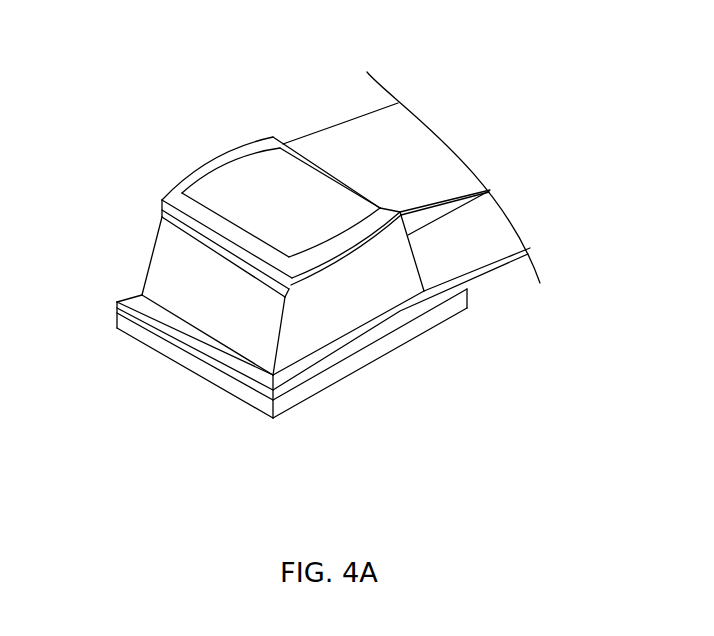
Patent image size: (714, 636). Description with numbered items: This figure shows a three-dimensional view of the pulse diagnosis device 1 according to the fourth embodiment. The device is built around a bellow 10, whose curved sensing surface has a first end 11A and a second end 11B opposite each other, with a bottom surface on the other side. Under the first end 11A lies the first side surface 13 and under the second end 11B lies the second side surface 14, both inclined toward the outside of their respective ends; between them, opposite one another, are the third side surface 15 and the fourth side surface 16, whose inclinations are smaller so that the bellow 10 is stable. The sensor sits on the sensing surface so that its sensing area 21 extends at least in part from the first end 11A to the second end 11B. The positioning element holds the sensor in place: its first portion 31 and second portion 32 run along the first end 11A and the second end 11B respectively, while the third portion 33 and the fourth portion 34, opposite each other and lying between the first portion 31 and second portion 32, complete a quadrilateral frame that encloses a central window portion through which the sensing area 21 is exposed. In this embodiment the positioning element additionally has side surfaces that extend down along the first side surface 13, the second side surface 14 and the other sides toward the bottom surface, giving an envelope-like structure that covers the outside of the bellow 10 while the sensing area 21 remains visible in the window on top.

The pulse diagnosis device 1 is at (110, 26).
The bellow 10 is at (167, 272).
The first end 11A is at (333, 173).
The second end 11B is at (233, 247).
The first side surface 13 is at (415, 252).
The second side surface 14 is at (219, 321).
The third side surface 15 is at (323, 309).
The fourth side surface 16 is at (153, 245).
The sensing area 21 is at (247, 170).
The first portion 31 is at (300, 145).
The second portion 32 is at (196, 214).
The third portion 33 is at (330, 240).
The fourth portion 34 is at (200, 170).